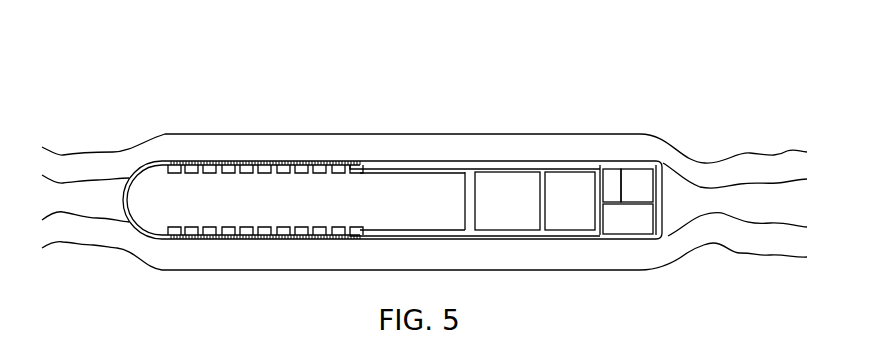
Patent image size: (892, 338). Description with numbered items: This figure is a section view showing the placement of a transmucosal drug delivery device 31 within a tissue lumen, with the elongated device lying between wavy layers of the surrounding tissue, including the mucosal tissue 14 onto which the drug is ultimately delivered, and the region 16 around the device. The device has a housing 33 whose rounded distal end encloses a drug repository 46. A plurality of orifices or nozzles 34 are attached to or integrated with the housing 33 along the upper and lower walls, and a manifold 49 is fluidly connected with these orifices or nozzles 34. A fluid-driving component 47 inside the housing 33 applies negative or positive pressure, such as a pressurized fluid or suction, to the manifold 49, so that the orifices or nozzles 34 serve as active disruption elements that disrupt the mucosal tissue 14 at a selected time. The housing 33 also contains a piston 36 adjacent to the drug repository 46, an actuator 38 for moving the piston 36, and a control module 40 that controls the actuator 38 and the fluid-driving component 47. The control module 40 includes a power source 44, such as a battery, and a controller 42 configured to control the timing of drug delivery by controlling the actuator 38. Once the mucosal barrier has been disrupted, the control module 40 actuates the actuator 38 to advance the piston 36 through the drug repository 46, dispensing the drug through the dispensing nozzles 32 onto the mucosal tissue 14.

The mucosal tissue 14 is at (126, 163).
The distal end region 16 is at (678, 208).
The drug delivery device 31 is at (368, 161).
The dispensing nozzles 32 is at (292, 161).
The housing 33 is at (138, 232).
The orifices or nozzles 34 is at (229, 161).
The piston 36 is at (465, 197).
The actuator 38 is at (512, 207).
The control module 40 is at (613, 170).
The controller 42 is at (651, 178).
The power source 44 is at (640, 230).
The drug repository 46 is at (210, 203).
The fluid-driving component 47 is at (579, 205).
The manifold 49 is at (498, 166).